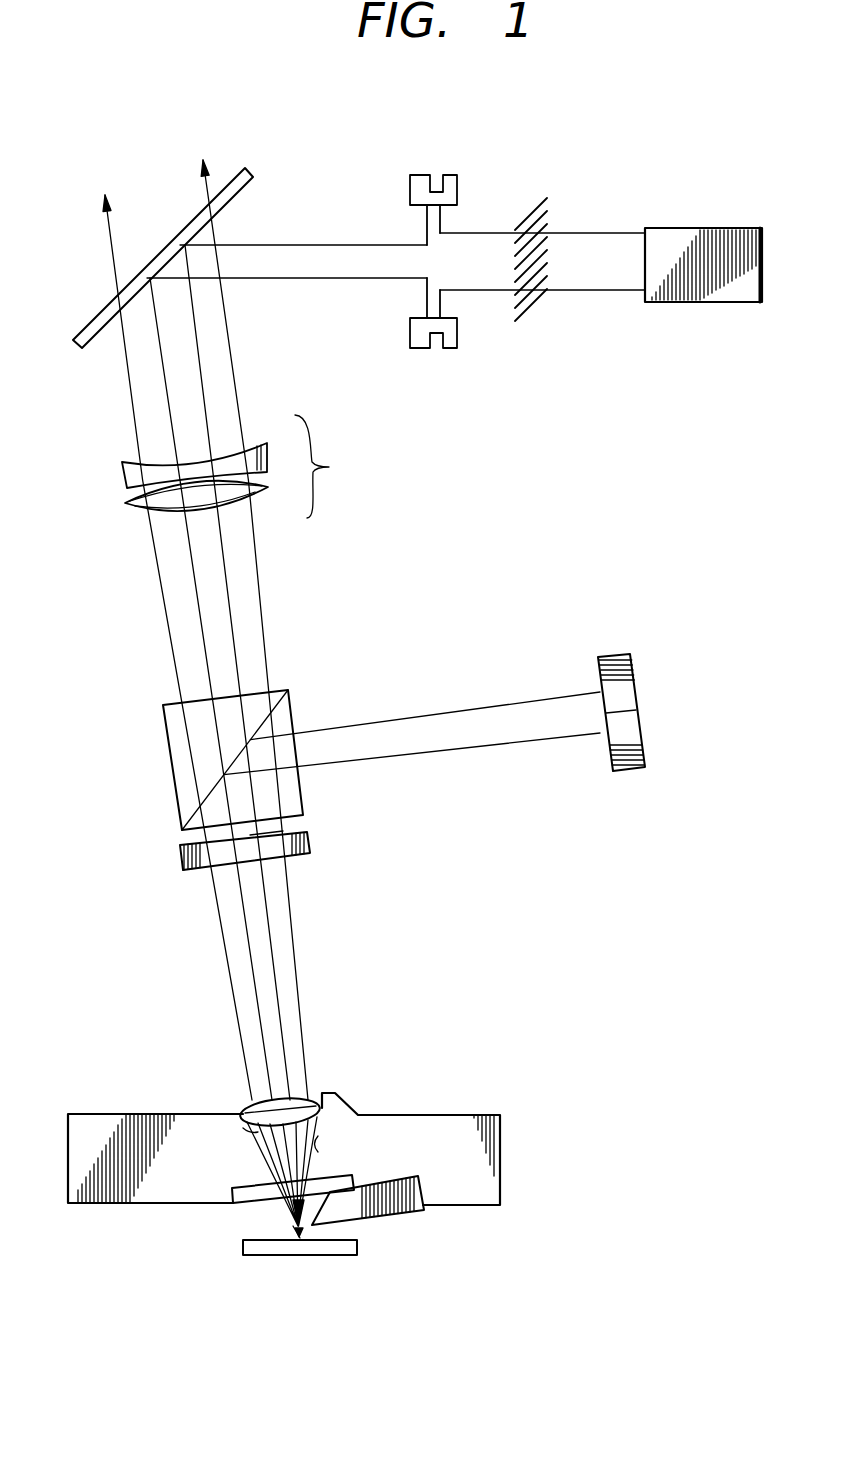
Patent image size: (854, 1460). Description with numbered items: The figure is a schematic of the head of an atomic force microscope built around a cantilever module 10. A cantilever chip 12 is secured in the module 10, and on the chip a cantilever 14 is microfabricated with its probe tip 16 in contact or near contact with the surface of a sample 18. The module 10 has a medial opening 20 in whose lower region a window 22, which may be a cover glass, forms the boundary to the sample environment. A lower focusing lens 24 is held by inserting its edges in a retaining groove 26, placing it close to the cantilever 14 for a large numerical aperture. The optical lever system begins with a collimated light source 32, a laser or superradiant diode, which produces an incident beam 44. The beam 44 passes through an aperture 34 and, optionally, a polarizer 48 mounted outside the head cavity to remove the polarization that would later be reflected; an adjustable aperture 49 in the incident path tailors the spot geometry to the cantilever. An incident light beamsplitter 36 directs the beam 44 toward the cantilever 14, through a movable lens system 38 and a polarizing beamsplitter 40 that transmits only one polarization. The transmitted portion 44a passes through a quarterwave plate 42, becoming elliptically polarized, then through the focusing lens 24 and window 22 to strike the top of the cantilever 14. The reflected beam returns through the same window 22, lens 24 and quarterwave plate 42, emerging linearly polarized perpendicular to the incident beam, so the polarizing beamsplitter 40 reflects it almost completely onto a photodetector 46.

The cantilever module 10 is at (498, 1147).
The cantilever chip 12 is at (420, 1212).
The cantilever 14 is at (308, 1228).
The probe tip 16 is at (293, 1227).
The sample 18 is at (276, 1255).
The medial opening 20 is at (321, 1153).
The window 22 is at (241, 1188).
The lower focusing lens 24 is at (316, 1105).
The retaining groove 26 is at (243, 1136).
The collimated light source 32 is at (685, 228).
The aperture 34 is at (433, 278).
The incident light beamsplitter 36 is at (237, 195).
The movable lens system 38 is at (244, 466).
The polarizing beamsplitter 40 is at (178, 733).
The quarterwave plate 42 is at (302, 858).
The incident beam 44 is at (312, 245).
The portion of the incident light beam 44a is at (283, 831).
The photodetector 46 is at (623, 698).
The polarizer 48 is at (528, 210).
The adjustable aperture 49 is at (443, 195).